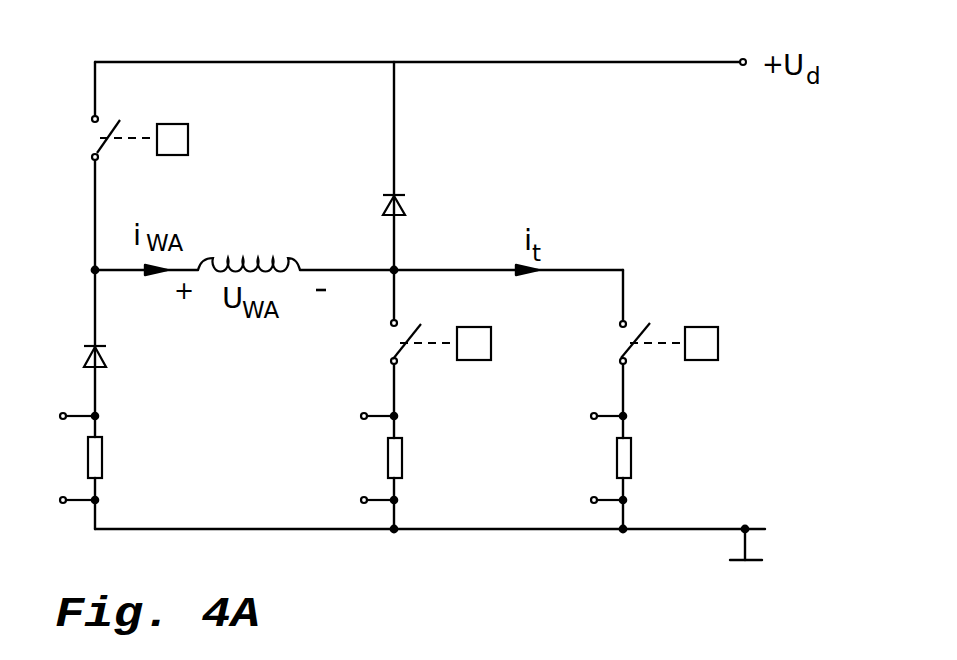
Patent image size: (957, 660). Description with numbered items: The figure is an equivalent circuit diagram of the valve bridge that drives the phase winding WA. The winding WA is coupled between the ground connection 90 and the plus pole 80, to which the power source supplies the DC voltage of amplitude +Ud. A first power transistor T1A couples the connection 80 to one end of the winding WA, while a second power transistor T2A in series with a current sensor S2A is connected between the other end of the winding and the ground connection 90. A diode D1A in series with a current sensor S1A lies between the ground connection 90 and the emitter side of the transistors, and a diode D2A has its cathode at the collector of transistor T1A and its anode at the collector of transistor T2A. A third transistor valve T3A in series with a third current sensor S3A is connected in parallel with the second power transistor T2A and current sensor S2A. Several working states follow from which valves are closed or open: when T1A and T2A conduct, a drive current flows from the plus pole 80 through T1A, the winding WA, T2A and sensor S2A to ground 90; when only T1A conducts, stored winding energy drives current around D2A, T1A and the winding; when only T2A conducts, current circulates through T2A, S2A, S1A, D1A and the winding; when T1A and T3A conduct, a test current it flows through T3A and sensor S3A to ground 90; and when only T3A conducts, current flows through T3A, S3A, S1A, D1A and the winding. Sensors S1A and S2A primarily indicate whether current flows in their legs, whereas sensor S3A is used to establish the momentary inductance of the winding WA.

The connection (plus pole) 80 is at (744, 59).
The ground connection 90 is at (745, 527).
The first power transistor T1A is at (93, 136).
The second power transistor T2A is at (390, 338).
The third transistor valve T3A is at (629, 333).
The diode D1A is at (128, 361).
The diode D2A is at (428, 216).
The phase winding WA is at (227, 258).
The current sensor S1A is at (114, 458).
The current sensor S2A is at (415, 458).
The third current sensor S3A is at (643, 458).